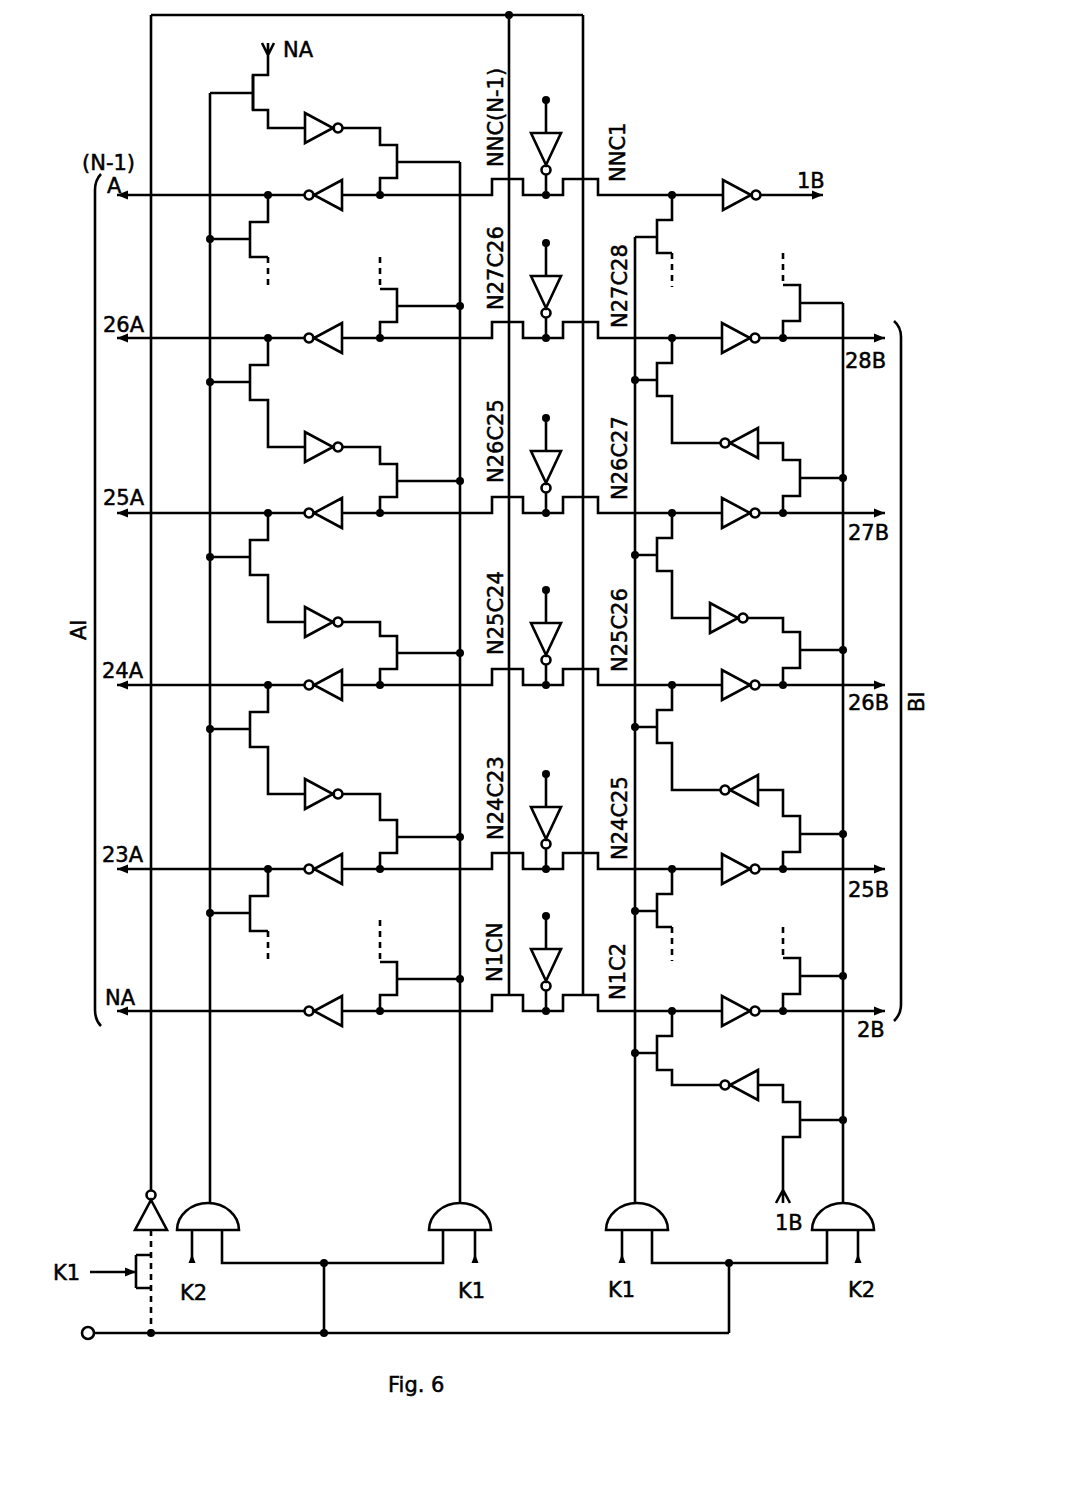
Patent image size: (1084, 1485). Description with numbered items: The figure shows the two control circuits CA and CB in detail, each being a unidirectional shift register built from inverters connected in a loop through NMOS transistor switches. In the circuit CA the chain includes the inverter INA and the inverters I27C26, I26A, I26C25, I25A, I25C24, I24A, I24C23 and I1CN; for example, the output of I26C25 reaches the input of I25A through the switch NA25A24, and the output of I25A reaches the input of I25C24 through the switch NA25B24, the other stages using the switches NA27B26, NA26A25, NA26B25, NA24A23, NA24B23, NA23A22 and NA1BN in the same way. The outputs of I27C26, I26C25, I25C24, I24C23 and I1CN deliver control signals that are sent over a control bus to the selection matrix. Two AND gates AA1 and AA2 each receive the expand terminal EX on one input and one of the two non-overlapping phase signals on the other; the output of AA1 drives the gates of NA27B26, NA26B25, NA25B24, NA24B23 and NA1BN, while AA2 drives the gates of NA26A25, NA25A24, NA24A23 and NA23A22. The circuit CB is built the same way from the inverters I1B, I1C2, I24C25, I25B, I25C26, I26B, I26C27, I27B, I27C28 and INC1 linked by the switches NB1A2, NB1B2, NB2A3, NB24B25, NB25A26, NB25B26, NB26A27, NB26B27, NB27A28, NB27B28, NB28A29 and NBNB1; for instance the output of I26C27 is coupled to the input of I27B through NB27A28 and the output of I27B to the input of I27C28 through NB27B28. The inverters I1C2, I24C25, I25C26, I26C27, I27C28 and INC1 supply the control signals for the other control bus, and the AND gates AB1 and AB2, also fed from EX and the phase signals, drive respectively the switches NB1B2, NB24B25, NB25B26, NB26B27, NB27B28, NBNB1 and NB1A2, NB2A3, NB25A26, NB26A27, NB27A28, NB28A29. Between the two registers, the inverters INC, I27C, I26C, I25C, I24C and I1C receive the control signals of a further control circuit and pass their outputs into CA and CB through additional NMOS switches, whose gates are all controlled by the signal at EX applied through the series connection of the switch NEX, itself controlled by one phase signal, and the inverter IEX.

The inverter INA is at (327, 116).
The inverter INC is at (558, 136).
The inverter INC1 is at (729, 180).
The control circuit CA is at (401, 109).
The control circuit CB is at (663, 111).
The inverter I27C is at (554, 280).
The inverter I26C is at (554, 455).
The inverter I25C is at (554, 626).
The inverter I24C is at (554, 811).
The inverter I1C is at (558, 954).
The NMOS transistor switch NA27B26 is at (420, 290).
The inverter I27C26 is at (305, 324).
The NMOS transistor switch NA26A25 is at (288, 392).
The inverter I26A is at (315, 431).
The NMOS transistor switch NA26B25 is at (403, 465).
The inverter I26C25 is at (304, 499).
The NMOS transistor switch NA25A24 is at (286, 567).
The inverter I25A is at (315, 605).
The NMOS transistor switch NA25B24 is at (403, 637).
The inverter I25C24 is at (302, 670).
The NMOS transistor switch NA24A23 is at (285, 739).
The inverter I24A is at (313, 781).
The NMOS transistor switch NA24B23 is at (403, 821).
The inverter I24C23 is at (302, 856).
The NMOS transistor switch NA23A22 is at (280, 915).
The NMOS transistor switch NA1BN is at (420, 963).
The inverter I1CN is at (311, 998).
The NMOS transistor switch NBNB1 is at (692, 239).
The NMOS transistor switch NB28A29 is at (819, 297).
The inverter I27C28 is at (715, 324).
The NMOS transistor switch NB27B28 is at (702, 390).
The inverter I27B is at (733, 429).
The NMOS transistor switch NB27A28 is at (802, 466).
The inverter I26C27 is at (715, 498).
The NMOS transistor switch NB26B27 is at (700, 565).
The inverter I26B is at (720, 603).
The NMOS transistor switch NB26A27 is at (797, 638).
The inverter I25C26 is at (717, 672).
The NMOS transistor switch NB25B26 is at (700, 737).
The inverter I25B is at (733, 781).
The NMOS transistor switch NB25A26 is at (802, 822).
The inverter I24C25 is at (717, 854).
The NMOS transistor switch NB24B25 is at (700, 915).
The NMOS transistor switch NB2A3 is at (813, 969).
The inverter I1C2 is at (714, 997).
The NMOS transistor switch NB1B2 is at (687, 1048).
The inverter I1B is at (740, 1106).
The NMOS transistor switch NB1A2 is at (802, 1132).
The inverter IEX is at (124, 1264).
The NMOS transistor switch NEX is at (138, 1271).
The AND gate AA1 is at (472, 1221).
The AND gate AA2 is at (310, 1258).
The AND gate AB1 is at (716, 1254).
The AND gate AB2 is at (857, 1219).
The expand terminal EX is at (398, 1347).